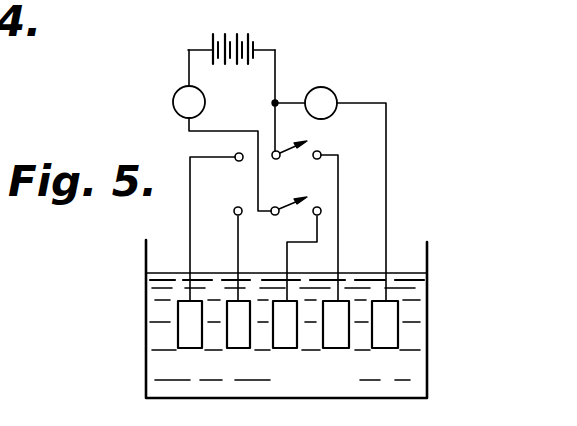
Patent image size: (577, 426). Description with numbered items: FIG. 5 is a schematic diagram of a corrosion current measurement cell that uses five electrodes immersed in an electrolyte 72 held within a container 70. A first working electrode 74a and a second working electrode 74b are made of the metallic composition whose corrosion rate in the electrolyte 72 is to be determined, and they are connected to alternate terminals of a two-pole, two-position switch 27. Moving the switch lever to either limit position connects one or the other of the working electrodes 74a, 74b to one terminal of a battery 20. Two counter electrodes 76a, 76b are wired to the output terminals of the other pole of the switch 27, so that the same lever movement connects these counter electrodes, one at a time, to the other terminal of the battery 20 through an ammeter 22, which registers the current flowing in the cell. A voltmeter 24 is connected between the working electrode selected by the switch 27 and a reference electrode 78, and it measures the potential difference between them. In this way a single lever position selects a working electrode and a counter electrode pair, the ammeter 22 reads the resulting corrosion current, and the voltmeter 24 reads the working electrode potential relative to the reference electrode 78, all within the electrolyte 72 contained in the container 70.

The battery 20 is at (250, 38).
The ammeter 22 is at (173, 103).
The voltmeter 24 is at (334, 112).
The two-pole, two-position switch 27 is at (275, 178).
The container 70 is at (427, 399).
The electrolyte 72 is at (335, 389).
The first working electrode 74a is at (178, 306).
The second working electrode 74b is at (343, 346).
The counter electrode 76a is at (227, 340).
The counter electrode 76b is at (280, 350).
The reference electrode 78 is at (396, 310).